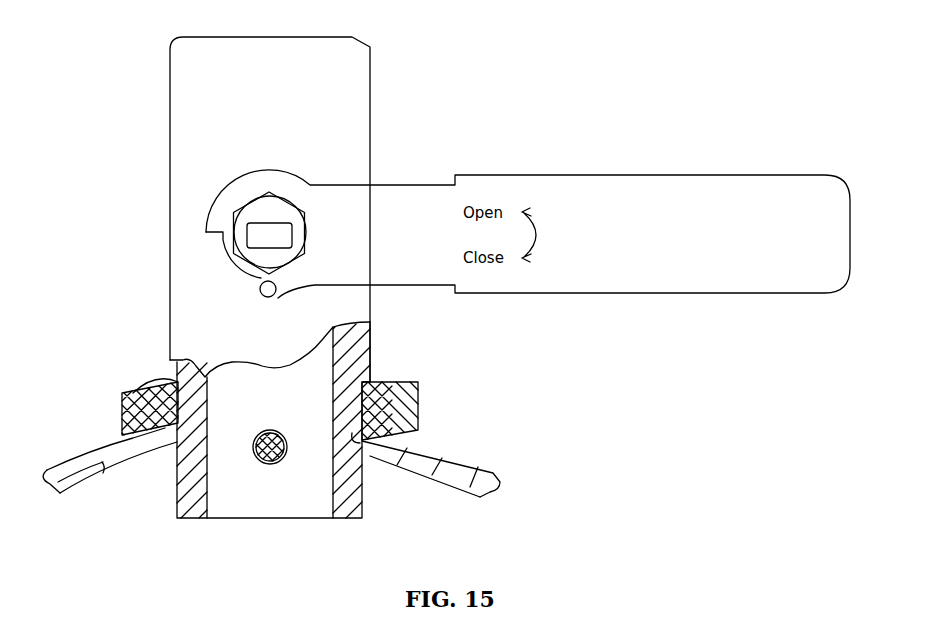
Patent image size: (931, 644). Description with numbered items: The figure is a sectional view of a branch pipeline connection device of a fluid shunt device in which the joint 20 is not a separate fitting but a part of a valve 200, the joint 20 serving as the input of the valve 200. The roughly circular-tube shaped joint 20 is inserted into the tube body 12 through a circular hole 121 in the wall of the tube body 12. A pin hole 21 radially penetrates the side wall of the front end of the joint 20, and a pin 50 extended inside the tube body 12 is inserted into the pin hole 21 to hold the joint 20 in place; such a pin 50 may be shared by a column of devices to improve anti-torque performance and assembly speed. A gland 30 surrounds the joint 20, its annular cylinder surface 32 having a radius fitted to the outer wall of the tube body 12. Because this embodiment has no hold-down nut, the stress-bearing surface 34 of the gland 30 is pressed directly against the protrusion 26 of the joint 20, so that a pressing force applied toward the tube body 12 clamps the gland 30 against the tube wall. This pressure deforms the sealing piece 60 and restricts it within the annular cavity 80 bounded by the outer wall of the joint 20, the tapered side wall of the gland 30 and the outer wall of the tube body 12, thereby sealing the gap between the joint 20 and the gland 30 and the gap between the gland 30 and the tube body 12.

The valve 200 is at (185, 192).
The joint 20 is at (207, 463).
The pin hole 21 is at (270, 430).
The pin 50 is at (276, 458).
The gland 30 is at (150, 408).
The protrusion 26 is at (147, 388).
The tube body 12 is at (107, 462).
The annular cylinder surface 32 is at (141, 450).
The annular cavity 80 is at (168, 428).
The stress-bearing surface 34 is at (373, 372).
The sealing piece 60 is at (383, 408).
The circular hole 121 is at (370, 447).